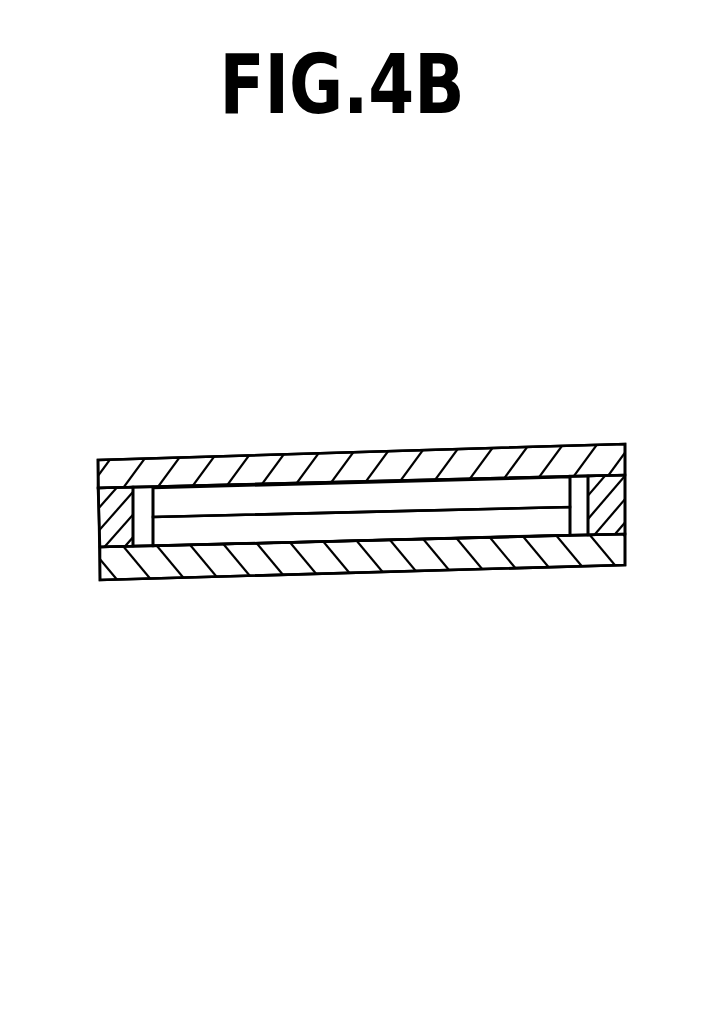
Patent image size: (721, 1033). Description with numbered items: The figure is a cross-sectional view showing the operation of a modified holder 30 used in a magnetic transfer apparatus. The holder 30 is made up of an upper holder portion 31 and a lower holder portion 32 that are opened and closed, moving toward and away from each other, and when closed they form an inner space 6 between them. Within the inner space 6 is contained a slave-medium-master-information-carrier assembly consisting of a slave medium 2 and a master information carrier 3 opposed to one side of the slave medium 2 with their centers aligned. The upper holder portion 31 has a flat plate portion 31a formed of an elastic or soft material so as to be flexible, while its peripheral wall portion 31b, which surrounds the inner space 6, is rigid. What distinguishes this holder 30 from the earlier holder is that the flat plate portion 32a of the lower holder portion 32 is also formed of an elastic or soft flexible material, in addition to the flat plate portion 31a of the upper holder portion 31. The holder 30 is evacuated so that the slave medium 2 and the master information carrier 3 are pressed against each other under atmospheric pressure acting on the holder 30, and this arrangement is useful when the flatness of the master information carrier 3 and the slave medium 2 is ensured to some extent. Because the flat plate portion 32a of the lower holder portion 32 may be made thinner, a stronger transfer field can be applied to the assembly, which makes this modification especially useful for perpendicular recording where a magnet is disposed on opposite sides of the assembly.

The holder 30 is at (273, 375).
The slave medium 2 is at (383, 490).
The master information carrier 3 is at (408, 523).
The inner space 6 is at (141, 505).
The upper holder portion 31 is at (496, 444).
The flat plate portion of the upper holder portion 31a is at (298, 453).
The peripheral wall portion of the upper holder portion 31b is at (640, 533).
The lower holder portion 32 is at (513, 572).
The flat plate portion of the lower holder portion 32a is at (270, 562).